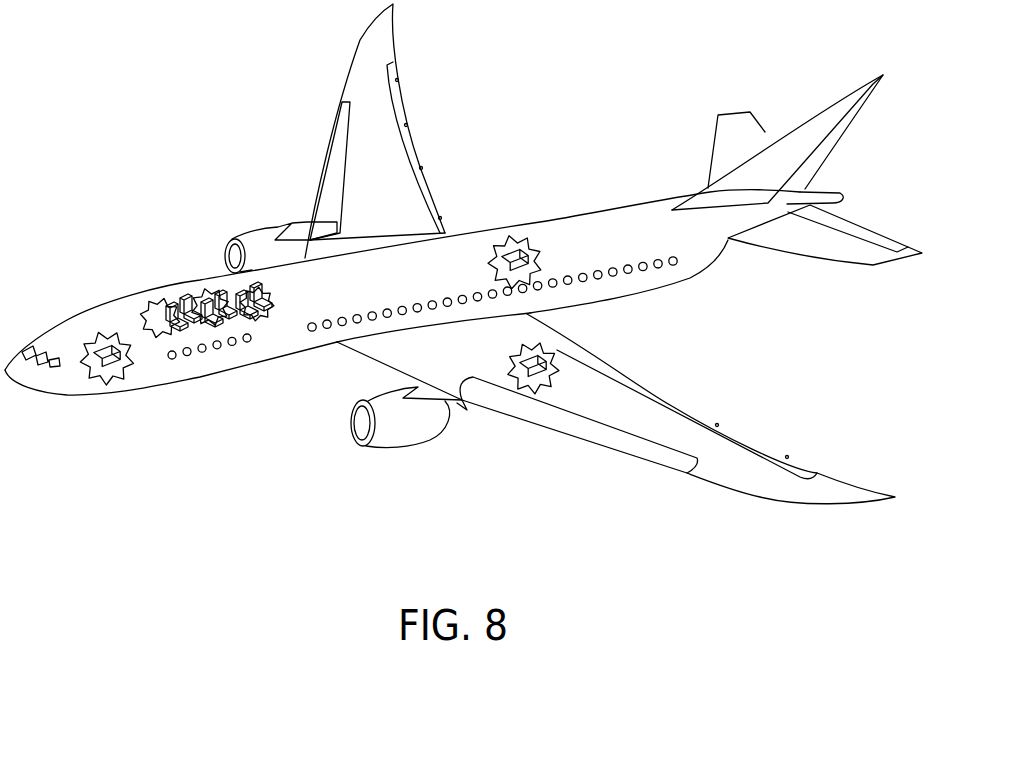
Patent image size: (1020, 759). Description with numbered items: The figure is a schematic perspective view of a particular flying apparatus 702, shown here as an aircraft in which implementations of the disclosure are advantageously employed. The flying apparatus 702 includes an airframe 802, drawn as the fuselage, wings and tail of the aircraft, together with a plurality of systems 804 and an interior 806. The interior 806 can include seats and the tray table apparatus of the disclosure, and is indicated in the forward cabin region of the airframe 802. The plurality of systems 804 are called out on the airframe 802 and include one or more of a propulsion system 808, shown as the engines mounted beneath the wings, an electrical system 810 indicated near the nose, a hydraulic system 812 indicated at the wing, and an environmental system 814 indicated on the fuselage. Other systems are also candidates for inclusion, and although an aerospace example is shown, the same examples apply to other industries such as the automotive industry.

The flying apparatus 702 is at (136, 66).
The airframe 802 is at (276, 420).
The plurality of systems 804 is at (600, 170).
The interior 806 is at (173, 300).
The propulsion system 808 is at (255, 220).
The electrical system 810 is at (108, 342).
The hydraulic system 812 is at (535, 350).
The environmental system 814 is at (518, 242).